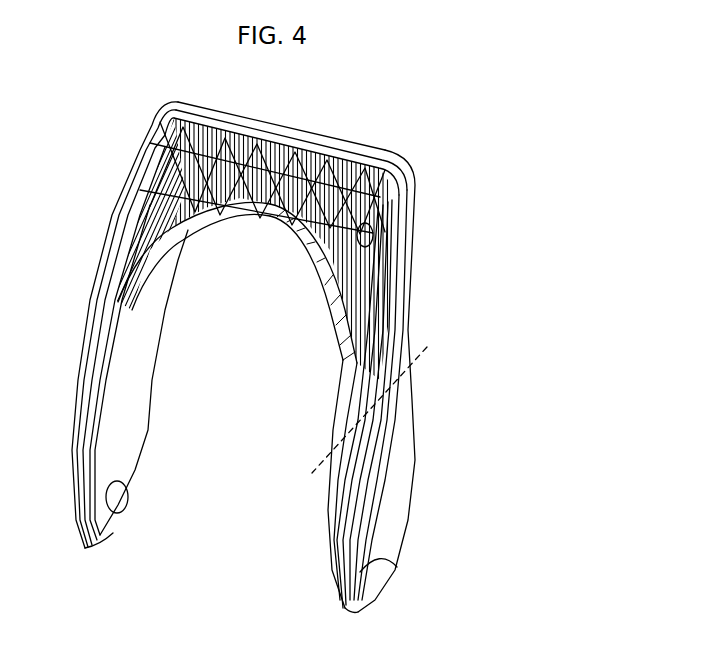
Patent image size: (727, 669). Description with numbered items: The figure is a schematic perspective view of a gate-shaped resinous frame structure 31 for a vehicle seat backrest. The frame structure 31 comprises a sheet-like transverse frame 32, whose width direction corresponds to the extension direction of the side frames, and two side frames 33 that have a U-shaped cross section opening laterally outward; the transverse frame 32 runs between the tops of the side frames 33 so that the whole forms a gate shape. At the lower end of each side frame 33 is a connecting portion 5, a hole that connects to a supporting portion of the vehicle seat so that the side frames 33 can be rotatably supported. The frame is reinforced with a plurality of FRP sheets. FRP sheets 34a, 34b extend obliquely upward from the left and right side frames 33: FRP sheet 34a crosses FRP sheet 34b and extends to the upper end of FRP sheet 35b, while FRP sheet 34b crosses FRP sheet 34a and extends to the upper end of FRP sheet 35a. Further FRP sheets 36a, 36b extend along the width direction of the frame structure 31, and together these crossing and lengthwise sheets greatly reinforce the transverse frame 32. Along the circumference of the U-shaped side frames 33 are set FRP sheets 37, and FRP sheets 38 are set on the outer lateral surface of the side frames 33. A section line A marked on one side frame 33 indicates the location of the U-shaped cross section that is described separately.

The frame structure 31 is at (454, 151).
The transverse frame 32 is at (188, 104).
The side frame 33 is at (132, 427).
The FRP sheet 34a is at (167, 207).
The FRP sheet 34b is at (297, 252).
The FRP sheet 35a is at (227, 142).
The FRP sheet 35b is at (357, 165).
The FRP sheet 36a is at (263, 152).
The FRP sheet 36b is at (327, 152).
The FRP sheet 37 is at (367, 293).
The FRP sheet 38 is at (373, 443).
The connecting portion 5 is at (113, 497).
The section line A- A is at (368, 401).